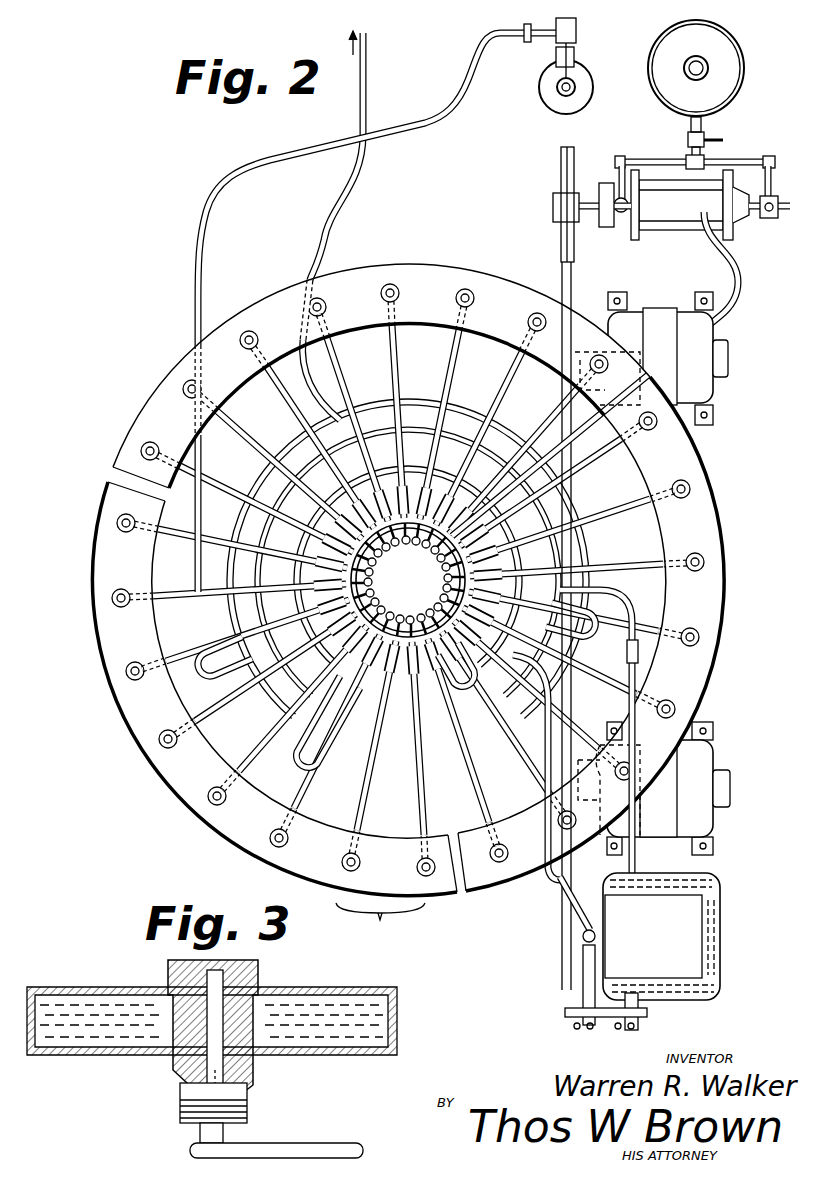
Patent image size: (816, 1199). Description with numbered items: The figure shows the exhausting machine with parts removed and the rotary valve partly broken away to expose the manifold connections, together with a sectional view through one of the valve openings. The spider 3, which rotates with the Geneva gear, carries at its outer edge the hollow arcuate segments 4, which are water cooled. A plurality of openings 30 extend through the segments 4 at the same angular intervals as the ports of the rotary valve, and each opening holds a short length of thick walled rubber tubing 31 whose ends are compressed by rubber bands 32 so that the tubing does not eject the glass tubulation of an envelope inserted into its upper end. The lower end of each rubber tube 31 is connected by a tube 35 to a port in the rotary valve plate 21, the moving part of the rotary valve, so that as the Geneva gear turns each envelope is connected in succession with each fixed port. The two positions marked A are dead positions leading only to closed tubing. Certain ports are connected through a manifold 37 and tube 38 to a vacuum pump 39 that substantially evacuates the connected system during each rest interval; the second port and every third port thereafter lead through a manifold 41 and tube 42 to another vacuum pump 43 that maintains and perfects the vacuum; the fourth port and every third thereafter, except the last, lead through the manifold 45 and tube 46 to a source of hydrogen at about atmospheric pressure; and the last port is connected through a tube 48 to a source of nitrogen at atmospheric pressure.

In FIG. 2, the spider 3 is at (352, 810).
In FIG. 2, the hollow arcuate segments 4 is at (160, 386).
In FIG. 3, the hollow arcuate segments 4 is at (78, 988).
In FIG. 2, the rotary valve plate 21 is at (402, 640).
In FIG. 2, the openings 30 is at (212, 788).
In FIG. 3, the openings 30 is at (168, 975).
In FIG. 3, the rubber tubing 31 is at (250, 1070).
In FIG. 3, the rubber bands 32 is at (262, 970).
In FIG. 2, the tube 35 is at (228, 490).
In FIG. 3, the tube 35 is at (300, 1142).
In FIG. 2, the manifold 37 is at (472, 672).
In FIG. 2, the tube 38 is at (727, 300).
In FIG. 2, the vacuum pump 39 is at (734, 224).
In FIG. 2, the manifold 41 is at (558, 652).
In FIG. 2, the tube 42 is at (545, 717).
In FIG. 2, the vacuum pump 43 is at (686, 931).
In FIG. 2, the manifold 45 is at (588, 584).
In FIG. 2, the tube 46 is at (347, 207).
In FIG. 2, the tube 48 is at (470, 62).